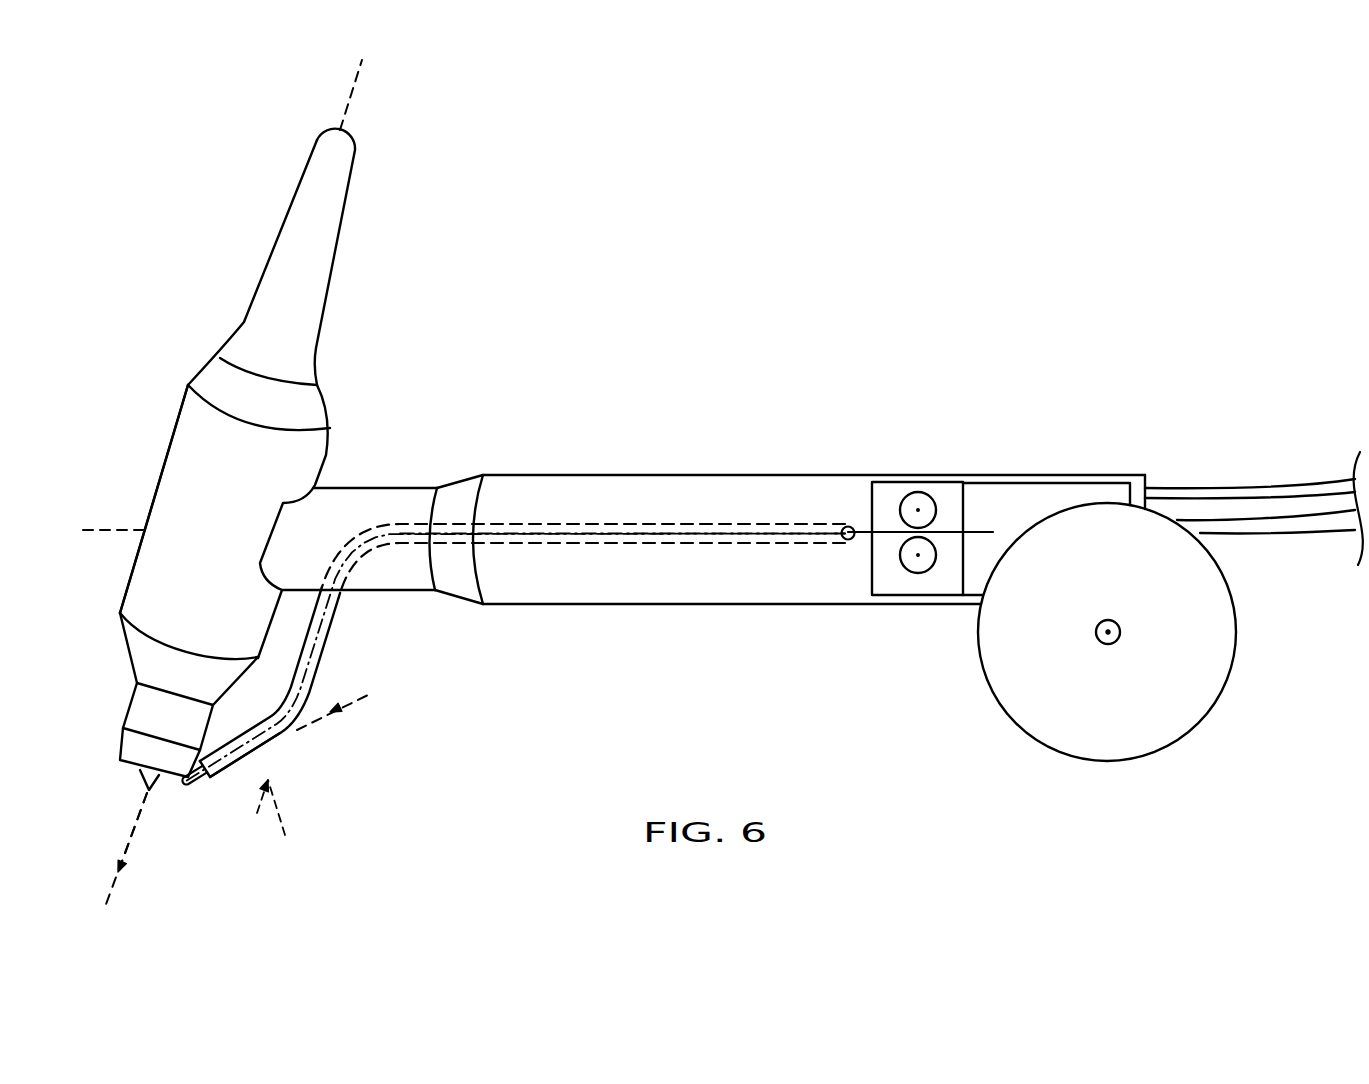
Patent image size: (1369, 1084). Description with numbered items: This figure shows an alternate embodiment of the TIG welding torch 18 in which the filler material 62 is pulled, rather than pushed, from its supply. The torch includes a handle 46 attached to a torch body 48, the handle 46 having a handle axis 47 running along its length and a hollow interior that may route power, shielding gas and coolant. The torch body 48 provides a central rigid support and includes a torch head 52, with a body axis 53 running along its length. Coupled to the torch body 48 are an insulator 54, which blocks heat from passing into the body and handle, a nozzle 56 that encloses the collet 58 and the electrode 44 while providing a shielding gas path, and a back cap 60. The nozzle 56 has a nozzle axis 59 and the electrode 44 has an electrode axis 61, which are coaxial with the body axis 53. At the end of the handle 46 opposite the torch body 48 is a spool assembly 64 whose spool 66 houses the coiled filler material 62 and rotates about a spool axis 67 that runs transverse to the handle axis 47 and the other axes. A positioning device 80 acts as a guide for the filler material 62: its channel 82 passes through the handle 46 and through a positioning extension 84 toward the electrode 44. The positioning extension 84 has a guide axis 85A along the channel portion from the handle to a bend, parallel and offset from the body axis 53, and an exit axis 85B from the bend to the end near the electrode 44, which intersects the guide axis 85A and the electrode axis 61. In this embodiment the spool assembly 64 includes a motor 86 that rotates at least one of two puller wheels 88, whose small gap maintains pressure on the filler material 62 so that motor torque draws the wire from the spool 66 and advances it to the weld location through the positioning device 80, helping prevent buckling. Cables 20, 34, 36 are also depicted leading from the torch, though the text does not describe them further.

The TIG welding torch 18 is at (843, 393).
The cable assembly 20 is at (1217, 488).
The cable 34 is at (1248, 508).
The cable 36 is at (1285, 535).
The electrode 44 is at (142, 782).
The handle 46 is at (815, 475).
The handle axis 47 is at (108, 528).
The torch body 48 is at (100, 422).
The torch head 52 is at (187, 425).
The body axis 53 is at (362, 90).
The insulator 54 is at (168, 654).
The nozzle 56 is at (125, 706).
The collet 58 is at (120, 742).
The nozzle axis 59 is at (137, 827).
The back cap 60 is at (293, 232).
The electrode axis 61 is at (118, 866).
The filler material 62 is at (193, 787).
The spool assembly 64 is at (962, 690).
The spool 66 is at (1125, 760).
The spool axis 67 is at (1102, 645).
The positioning device 80 is at (390, 672).
The channel 82 is at (648, 524).
The positioning extension 84 is at (268, 763).
The guide axis 85A is at (285, 826).
The exit axis 85B is at (340, 712).
The motor 86 is at (936, 482).
The puller wheels 88 is at (905, 500).